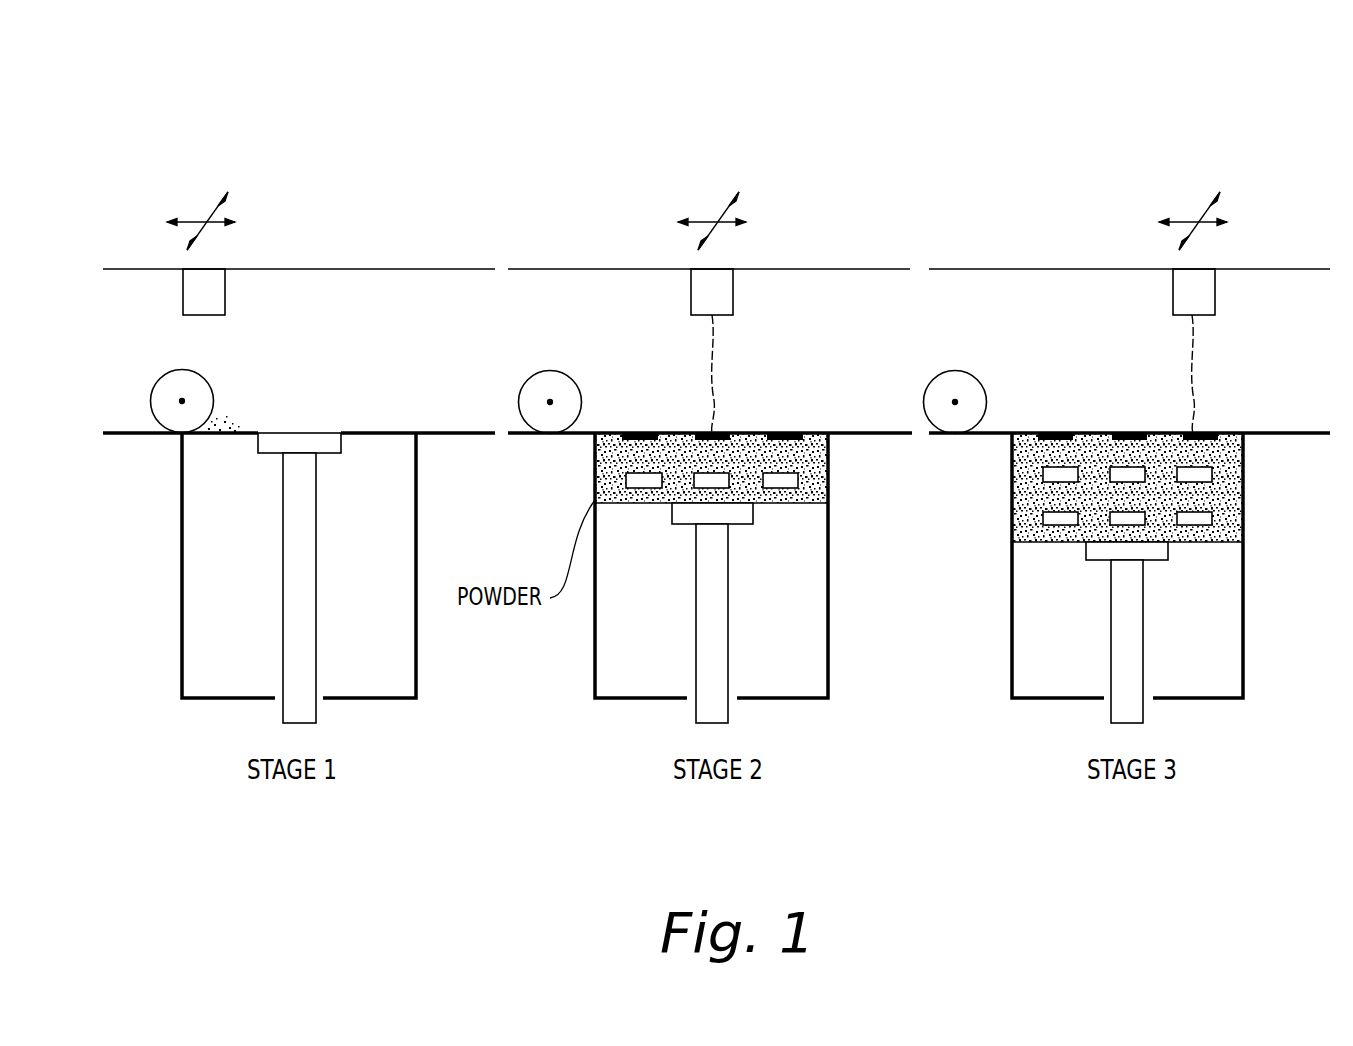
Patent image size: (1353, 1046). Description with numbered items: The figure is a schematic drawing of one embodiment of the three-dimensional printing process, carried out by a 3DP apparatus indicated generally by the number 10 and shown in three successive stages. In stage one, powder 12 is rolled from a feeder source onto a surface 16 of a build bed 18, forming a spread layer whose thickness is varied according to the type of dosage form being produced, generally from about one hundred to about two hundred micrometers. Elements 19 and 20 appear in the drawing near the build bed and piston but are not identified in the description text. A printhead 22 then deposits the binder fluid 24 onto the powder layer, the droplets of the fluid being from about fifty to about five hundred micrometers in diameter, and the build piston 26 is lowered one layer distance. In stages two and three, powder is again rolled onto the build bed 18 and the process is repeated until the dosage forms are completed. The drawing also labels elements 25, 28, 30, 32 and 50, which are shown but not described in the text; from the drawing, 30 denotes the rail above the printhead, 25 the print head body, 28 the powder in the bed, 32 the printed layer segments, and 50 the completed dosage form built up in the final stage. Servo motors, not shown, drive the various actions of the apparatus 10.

The 3DP apparatus 10 is at (1277, 146).
The powder 12 is at (158, 402).
The surface 16 is at (182, 603).
The build bed 18 is at (377, 432).
The chamber wall edge 19 is at (173, 436).
The piston movement direction 20 is at (359, 442).
The printhead 22 is at (272, 448).
The binder 24 is at (266, 426).
The print head 25 is at (225, 290).
The build piston 26 is at (708, 318).
The powder 28 is at (715, 397).
The print head carriage rail 30 is at (297, 268).
The printed layer segments 32 is at (692, 432).
The finished part 50 is at (1243, 480).